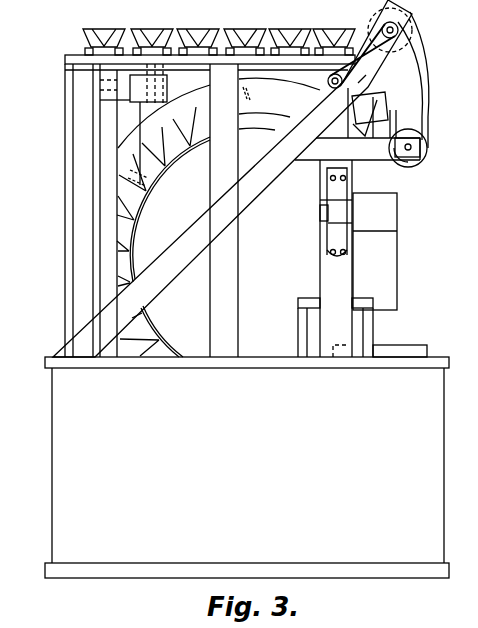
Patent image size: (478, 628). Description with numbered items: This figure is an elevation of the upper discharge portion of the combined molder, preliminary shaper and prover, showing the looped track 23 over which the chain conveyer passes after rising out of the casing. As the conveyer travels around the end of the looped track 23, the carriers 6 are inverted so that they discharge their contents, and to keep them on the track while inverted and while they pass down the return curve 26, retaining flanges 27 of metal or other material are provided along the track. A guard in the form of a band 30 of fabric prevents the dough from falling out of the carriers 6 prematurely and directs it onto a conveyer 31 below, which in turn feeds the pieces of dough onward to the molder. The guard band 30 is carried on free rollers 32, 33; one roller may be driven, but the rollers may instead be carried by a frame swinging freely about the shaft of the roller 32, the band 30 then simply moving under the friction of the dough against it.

The carrier 6 is at (200, 41).
The looped track 23 is at (292, 57).
The return curve 26 is at (120, 188).
The retaining flanges 27 is at (120, 211).
The band 30 is at (414, 43).
The conveyer 31 is at (388, 214).
The roller 32 is at (412, 20).
The roller 33 is at (424, 143).